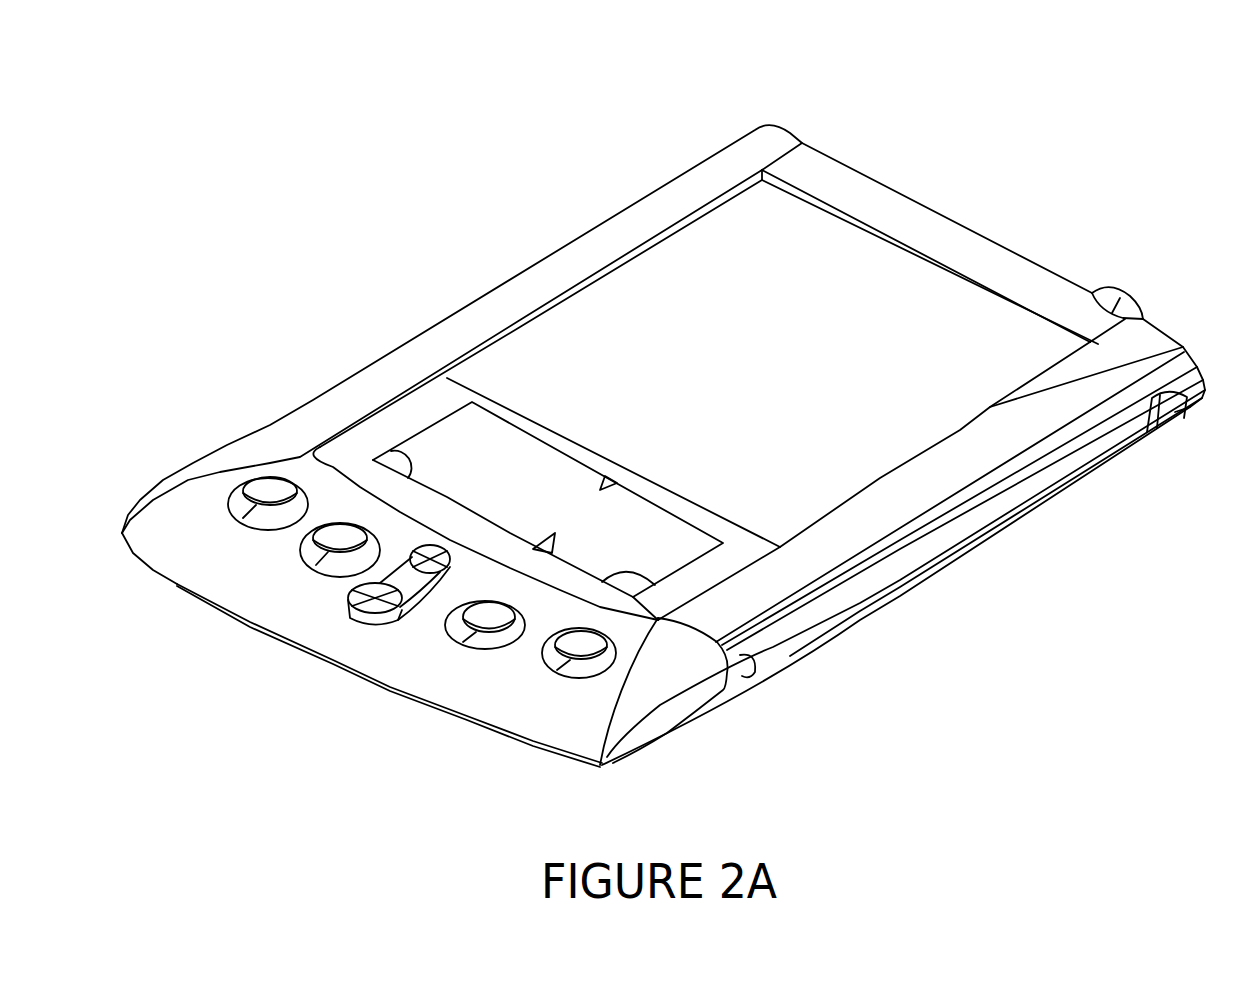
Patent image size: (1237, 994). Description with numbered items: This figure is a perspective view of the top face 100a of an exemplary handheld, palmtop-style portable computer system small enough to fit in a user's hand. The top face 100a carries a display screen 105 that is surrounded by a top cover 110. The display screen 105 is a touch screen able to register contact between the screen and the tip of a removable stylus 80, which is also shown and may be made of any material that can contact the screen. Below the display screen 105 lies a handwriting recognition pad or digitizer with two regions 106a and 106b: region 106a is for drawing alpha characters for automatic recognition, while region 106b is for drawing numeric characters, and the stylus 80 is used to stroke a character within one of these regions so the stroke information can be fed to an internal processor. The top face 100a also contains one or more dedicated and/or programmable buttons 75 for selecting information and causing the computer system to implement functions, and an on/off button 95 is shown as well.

The top face 100a is at (145, 95).
The top cover 110 is at (562, 272).
The display screen 105 is at (825, 295).
The region 106a is at (507, 479).
The region 106b is at (653, 553).
The buttons 75 is at (267, 478).
The on/off button 95 is at (1108, 292).
The stylus 80 is at (1075, 453).